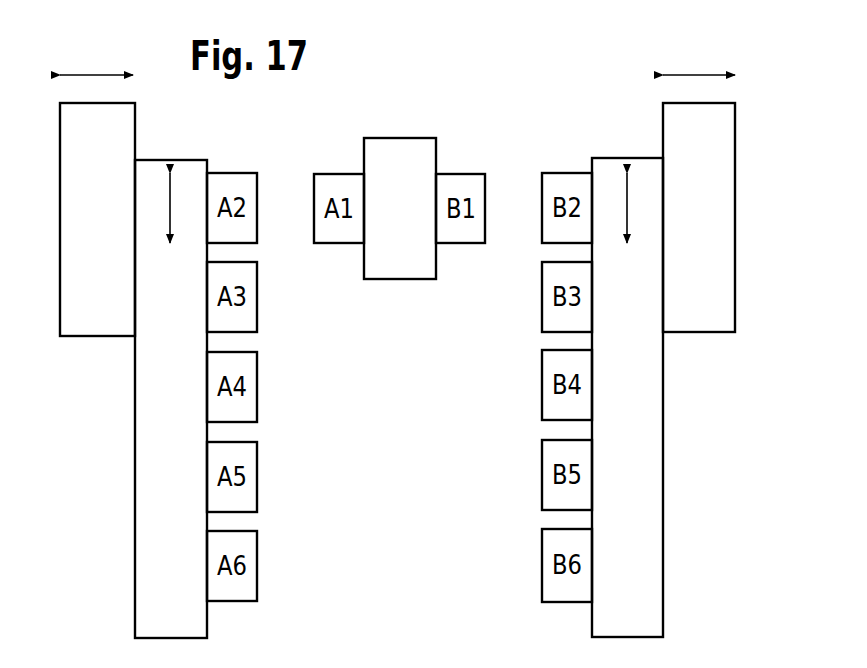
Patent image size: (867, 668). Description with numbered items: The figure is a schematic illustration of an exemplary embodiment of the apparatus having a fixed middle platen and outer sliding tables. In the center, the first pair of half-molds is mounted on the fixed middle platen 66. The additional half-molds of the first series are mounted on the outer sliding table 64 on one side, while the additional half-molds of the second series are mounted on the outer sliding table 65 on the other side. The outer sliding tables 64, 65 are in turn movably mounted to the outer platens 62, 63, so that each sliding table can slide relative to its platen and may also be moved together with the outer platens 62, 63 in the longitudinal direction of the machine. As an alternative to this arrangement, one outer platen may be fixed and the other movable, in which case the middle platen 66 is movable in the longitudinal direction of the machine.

The outer platen 62 is at (92, 318).
The outer platen 63 is at (708, 310).
The outer sliding table 64 is at (163, 507).
The outer sliding table 65 is at (642, 505).
The fixed middle platen 66 is at (402, 158).